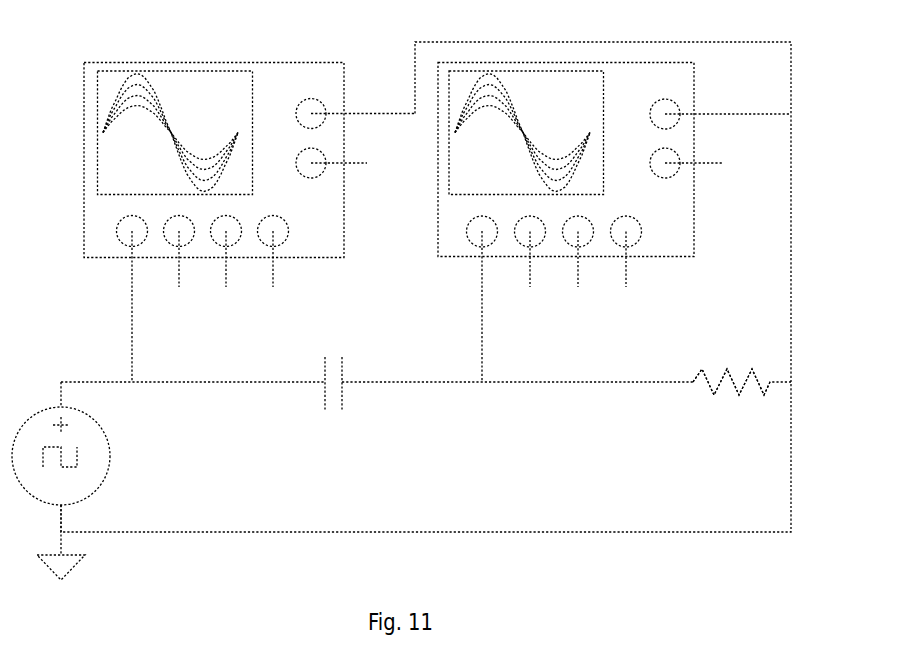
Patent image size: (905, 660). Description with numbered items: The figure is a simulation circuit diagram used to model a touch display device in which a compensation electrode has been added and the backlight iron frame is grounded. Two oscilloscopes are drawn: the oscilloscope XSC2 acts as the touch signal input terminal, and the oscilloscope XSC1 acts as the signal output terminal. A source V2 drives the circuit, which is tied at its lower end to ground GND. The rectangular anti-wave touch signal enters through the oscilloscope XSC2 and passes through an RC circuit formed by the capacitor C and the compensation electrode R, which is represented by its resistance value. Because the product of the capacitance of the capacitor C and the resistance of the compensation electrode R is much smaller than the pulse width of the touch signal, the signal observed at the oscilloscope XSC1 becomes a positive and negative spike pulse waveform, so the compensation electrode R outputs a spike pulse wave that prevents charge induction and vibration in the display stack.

The oscilloscope XSC2 is at (249, 153).
The oscilloscope XSC1 is at (614, 144).
The square-wave voltage source V2 (62.5 kHz, 4.5 V) V2 is at (126, 425).
The capacitor C is at (331, 385).
The compensation electrode R is at (728, 384).
The ground GND is at (105, 567).